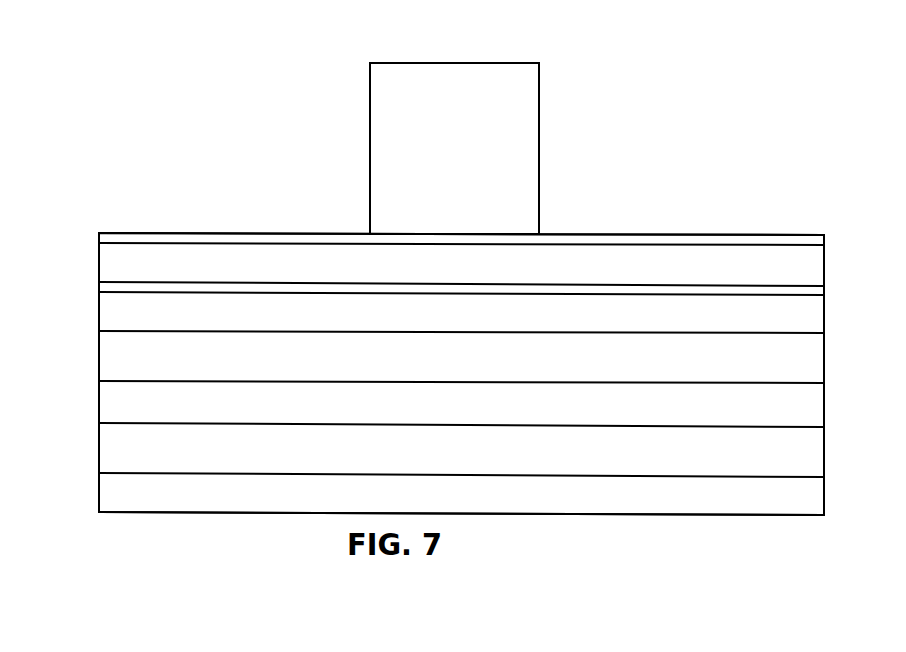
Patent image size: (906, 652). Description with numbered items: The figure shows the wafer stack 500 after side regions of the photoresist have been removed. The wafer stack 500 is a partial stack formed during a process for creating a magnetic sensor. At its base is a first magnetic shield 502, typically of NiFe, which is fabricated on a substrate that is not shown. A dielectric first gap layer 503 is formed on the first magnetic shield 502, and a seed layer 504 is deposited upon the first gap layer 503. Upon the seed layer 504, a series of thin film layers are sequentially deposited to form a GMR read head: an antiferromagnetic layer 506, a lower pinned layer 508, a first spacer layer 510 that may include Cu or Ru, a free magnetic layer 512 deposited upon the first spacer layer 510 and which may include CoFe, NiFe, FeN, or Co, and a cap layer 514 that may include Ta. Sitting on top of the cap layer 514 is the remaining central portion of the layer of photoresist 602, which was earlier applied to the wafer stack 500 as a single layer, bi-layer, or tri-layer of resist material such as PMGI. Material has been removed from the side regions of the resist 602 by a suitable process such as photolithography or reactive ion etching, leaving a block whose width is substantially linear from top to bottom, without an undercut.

The wafer stack 500 is at (118, 172).
The first magnetic shield 502 is at (98, 492).
The first gap layer 503 is at (98, 443).
The seed layer 504 is at (98, 403).
The antiferromagnetic layer 506 is at (99, 353).
The lower pinned layer 508 is at (99, 316).
The first spacer layer 510 is at (99, 289).
The free magnetic layer 512 is at (99, 266).
The cap layer 514 is at (99, 242).
The layer of photoresist 602 is at (370, 148).